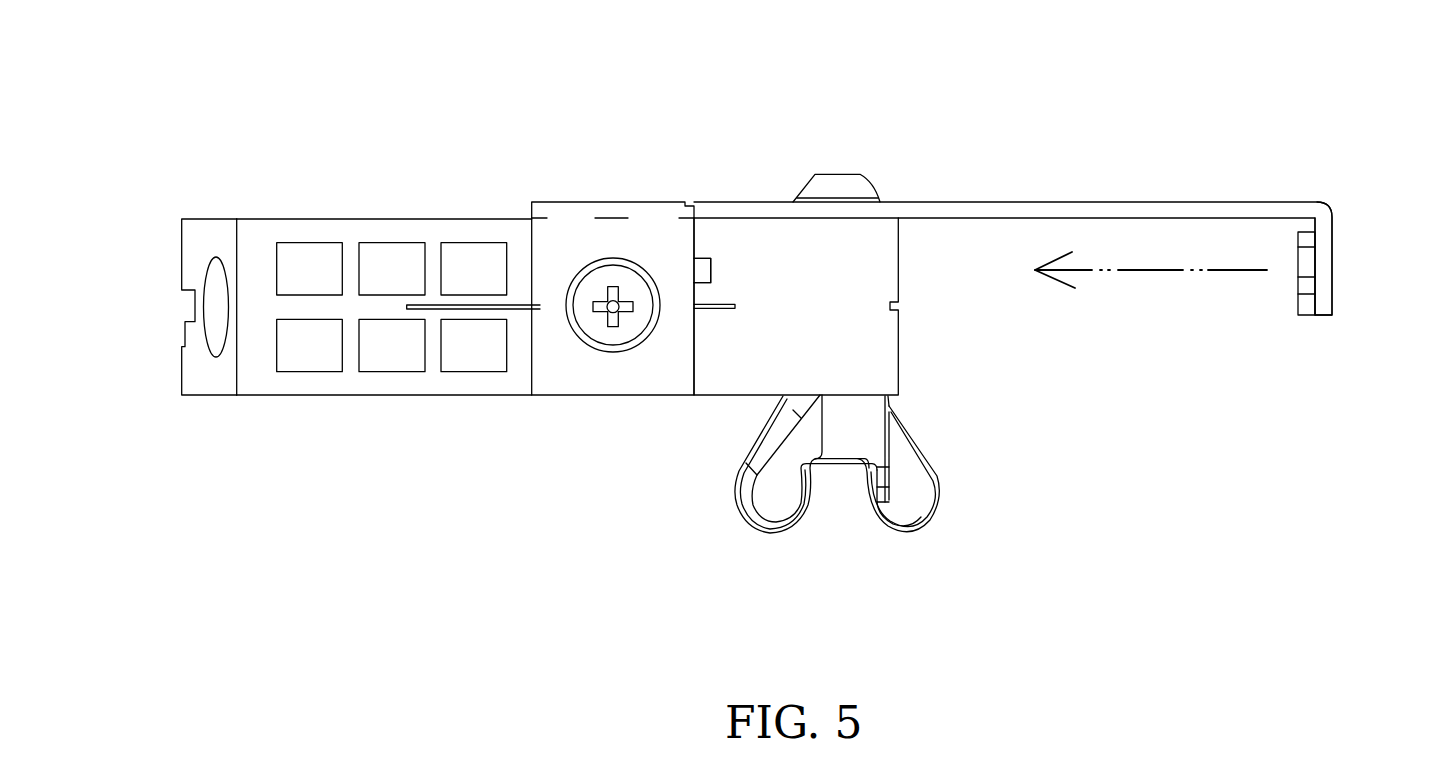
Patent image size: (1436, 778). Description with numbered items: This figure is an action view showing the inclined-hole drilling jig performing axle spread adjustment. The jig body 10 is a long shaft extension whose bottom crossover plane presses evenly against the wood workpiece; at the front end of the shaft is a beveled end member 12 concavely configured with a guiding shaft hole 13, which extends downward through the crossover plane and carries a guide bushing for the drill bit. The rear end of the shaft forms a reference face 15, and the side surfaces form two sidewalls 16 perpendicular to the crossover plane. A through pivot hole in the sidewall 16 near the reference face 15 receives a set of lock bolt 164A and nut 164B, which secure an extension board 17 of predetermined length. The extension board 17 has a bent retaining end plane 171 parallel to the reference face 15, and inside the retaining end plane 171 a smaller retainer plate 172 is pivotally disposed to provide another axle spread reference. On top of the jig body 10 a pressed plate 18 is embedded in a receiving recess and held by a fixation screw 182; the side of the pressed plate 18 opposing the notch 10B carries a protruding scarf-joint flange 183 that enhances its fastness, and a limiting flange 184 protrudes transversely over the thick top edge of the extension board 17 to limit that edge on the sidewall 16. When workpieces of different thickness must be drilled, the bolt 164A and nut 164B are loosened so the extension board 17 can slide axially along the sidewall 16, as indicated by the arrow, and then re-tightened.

The jig body 10 is at (373, 163).
The notch 10B is at (700, 257).
The beveled end member 12 is at (222, 232).
The guiding shaft hole 13 is at (213, 297).
The reference face 15 is at (897, 312).
The sidewall 16 is at (321, 218).
The extension board 17 is at (1008, 208).
The pressed plate 18 is at (570, 237).
The lock bolt 164A is at (838, 186).
The nut 164B is at (780, 490).
The retaining end plane 171 is at (1328, 257).
The retainer plate 172 is at (1306, 297).
The fixation screw 182 is at (630, 292).
The scarf-joint flange 183 is at (708, 272).
The limiting flange 184 is at (630, 210).